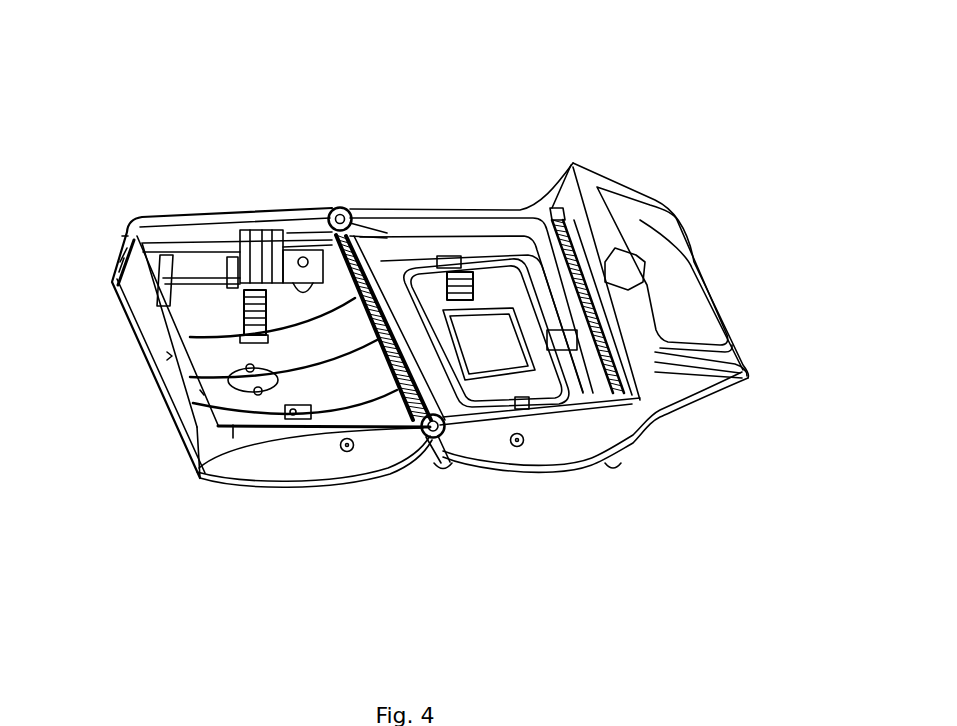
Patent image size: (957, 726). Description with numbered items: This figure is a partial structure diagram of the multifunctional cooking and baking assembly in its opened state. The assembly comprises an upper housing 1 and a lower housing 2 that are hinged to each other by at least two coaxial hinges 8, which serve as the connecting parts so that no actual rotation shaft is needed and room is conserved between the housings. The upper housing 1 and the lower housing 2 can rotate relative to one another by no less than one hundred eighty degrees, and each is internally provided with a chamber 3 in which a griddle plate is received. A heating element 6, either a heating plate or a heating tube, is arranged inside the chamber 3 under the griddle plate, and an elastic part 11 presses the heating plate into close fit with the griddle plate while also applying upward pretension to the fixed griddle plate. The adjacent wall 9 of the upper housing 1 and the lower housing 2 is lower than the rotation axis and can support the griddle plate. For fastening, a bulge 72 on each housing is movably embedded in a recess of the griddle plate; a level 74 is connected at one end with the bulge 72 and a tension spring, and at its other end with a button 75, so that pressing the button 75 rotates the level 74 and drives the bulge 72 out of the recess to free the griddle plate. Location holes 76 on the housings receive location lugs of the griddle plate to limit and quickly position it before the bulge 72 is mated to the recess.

The upper housing 1 is at (292, 462).
The lower housing 2 is at (543, 453).
The chamber 3 is at (215, 310).
The heating element 6 is at (507, 235).
The hinge 8 is at (353, 205).
The adjacent wall 9 is at (402, 398).
The elastic part 11 is at (180, 429).
The bulge 72 is at (287, 214).
The level 74 is at (268, 212).
The button 75 is at (517, 447).
The location hole 76 is at (118, 256).